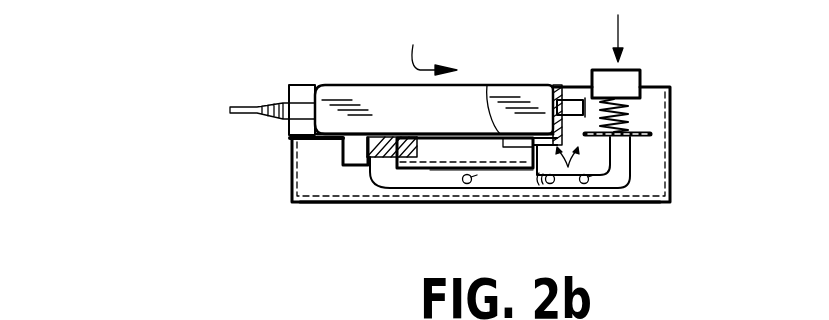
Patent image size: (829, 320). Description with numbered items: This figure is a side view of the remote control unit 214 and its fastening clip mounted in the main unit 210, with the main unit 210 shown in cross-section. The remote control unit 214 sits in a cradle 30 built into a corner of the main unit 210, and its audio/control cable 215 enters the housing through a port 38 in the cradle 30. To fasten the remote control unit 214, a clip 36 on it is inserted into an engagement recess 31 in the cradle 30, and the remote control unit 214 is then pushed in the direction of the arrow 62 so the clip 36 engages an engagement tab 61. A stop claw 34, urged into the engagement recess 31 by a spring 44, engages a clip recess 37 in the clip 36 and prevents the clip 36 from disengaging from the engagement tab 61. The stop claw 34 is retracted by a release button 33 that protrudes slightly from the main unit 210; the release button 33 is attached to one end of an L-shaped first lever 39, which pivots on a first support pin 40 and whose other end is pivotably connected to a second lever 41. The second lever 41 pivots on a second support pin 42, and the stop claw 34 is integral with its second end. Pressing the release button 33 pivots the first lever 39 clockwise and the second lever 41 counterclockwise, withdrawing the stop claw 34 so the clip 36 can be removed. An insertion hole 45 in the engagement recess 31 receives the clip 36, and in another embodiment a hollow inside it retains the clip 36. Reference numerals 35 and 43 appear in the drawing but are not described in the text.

The main unit 210 is at (284, 183).
The cradle 30 is at (297, 95).
The remote control unit 214 is at (327, 95).
The clip recess 37 is at (433, 82).
The arrow 62 is at (428, 44).
The engagement tab 61 is at (500, 137).
The engagement recess 31 is at (340, 158).
The stop claw 34 is at (373, 168).
The housing bottom 35 is at (312, 204).
The clip 36 is at (428, 153).
The first support pin 40 is at (618, 190).
The first lever 39 is at (618, 160).
The second lever 41 is at (497, 180).
The second support pin 42 is at (465, 182).
The insertion hole 45 is at (538, 168).
The pivot 43 is at (577, 190).
The port 38 is at (554, 100).
The audio/control cable 215 is at (582, 102).
The release button 33 is at (630, 78).
The spring 44 is at (630, 112).